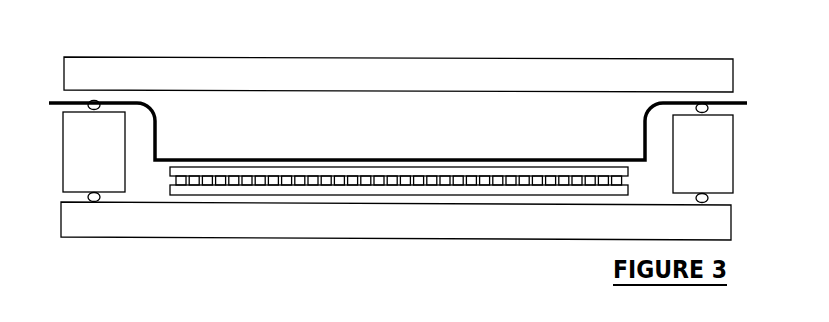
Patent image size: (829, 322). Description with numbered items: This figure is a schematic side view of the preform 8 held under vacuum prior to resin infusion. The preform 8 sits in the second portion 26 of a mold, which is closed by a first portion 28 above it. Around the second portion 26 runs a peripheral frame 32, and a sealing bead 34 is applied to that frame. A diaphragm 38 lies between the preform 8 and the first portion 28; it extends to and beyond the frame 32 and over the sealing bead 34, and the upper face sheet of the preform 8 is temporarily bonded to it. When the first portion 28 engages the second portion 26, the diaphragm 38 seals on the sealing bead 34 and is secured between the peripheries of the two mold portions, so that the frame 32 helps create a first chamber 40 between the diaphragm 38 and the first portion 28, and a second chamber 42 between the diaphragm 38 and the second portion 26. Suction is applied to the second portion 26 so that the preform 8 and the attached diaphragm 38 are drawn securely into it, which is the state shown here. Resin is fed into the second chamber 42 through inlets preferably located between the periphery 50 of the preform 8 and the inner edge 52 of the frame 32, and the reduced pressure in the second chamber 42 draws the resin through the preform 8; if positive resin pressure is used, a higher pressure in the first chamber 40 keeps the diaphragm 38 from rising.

The preform 8 is at (404, 185).
The second portion 26 is at (731, 218).
The first portion 28 is at (733, 71).
The peripheral frame 32 is at (710, 170).
The sealing bead 34 is at (704, 113).
The diaphragm 38 is at (740, 106).
The first chamber 40 is at (400, 116).
The second chamber 42 is at (270, 203).
The periphery of preform 50 is at (170, 190).
The inner edge of frame 52 is at (126, 143).